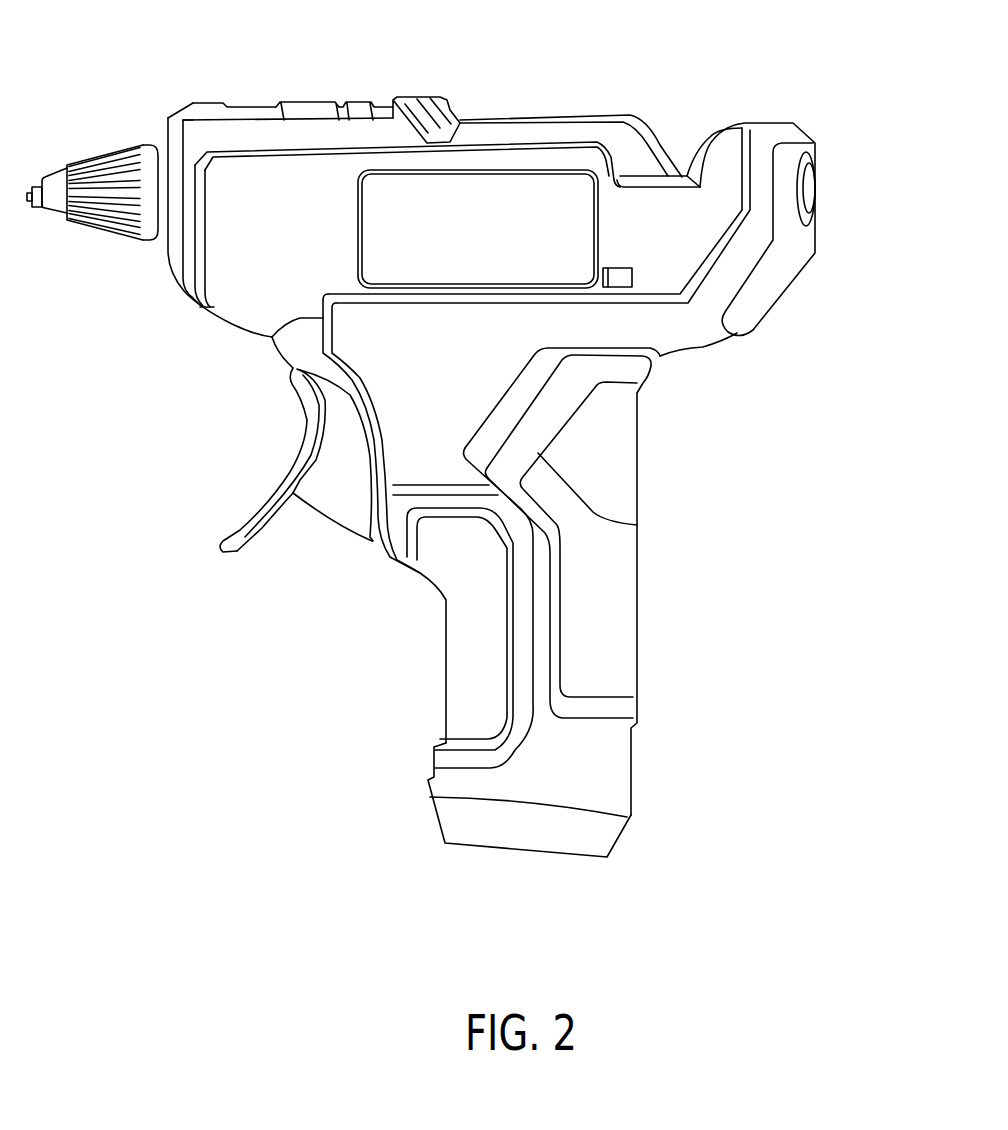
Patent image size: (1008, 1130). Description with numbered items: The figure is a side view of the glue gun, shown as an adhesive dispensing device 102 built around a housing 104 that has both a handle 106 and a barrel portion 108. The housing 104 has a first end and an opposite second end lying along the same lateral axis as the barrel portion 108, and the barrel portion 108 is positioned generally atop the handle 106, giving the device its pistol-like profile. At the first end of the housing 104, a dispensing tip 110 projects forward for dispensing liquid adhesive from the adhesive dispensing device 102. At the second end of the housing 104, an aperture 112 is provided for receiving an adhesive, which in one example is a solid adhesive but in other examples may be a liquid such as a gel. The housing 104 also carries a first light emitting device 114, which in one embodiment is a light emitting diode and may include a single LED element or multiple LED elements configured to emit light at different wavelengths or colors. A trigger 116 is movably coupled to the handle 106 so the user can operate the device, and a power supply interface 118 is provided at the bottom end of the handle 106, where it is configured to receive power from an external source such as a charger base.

The adhesive dispensing device 102 is at (830, 444).
The housing 104 is at (277, 103).
The handle 106 is at (643, 583).
The barrel portion 108 is at (437, 153).
The dispensing tip 110 is at (92, 167).
The aperture 112 is at (810, 182).
The first light emitting device 114 is at (620, 280).
The trigger 116 is at (277, 495).
The power supply interface 118 is at (533, 857).